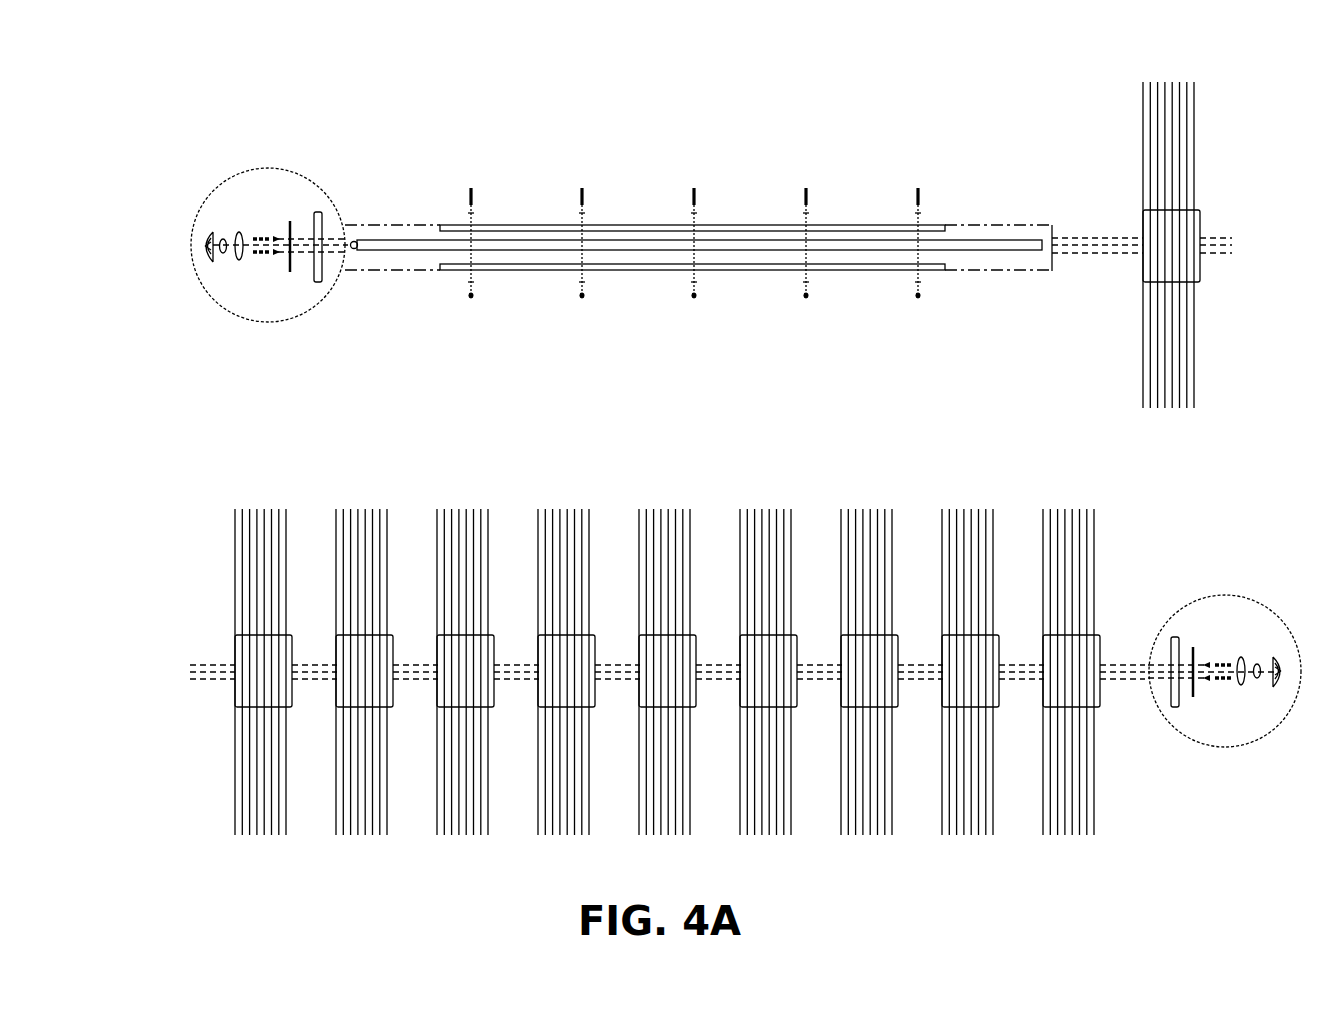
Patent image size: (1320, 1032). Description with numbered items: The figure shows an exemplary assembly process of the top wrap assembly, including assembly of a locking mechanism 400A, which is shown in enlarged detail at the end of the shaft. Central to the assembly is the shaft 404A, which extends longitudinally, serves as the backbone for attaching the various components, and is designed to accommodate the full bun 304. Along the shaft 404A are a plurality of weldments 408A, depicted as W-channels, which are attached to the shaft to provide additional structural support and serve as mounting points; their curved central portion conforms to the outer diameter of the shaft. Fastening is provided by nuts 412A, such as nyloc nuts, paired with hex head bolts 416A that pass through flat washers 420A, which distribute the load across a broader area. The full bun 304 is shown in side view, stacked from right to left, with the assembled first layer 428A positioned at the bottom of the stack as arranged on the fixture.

The full bun 304 is at (1139, 79).
The locking mechanism 400A is at (268, 322).
The shaft 404A is at (385, 256).
The weldments 408A is at (446, 276).
The nuts 412A is at (584, 298).
The hex head bolts 416A is at (600, 172).
The flat washers 420A is at (587, 219).
The assembled first layer 428A is at (1139, 167).